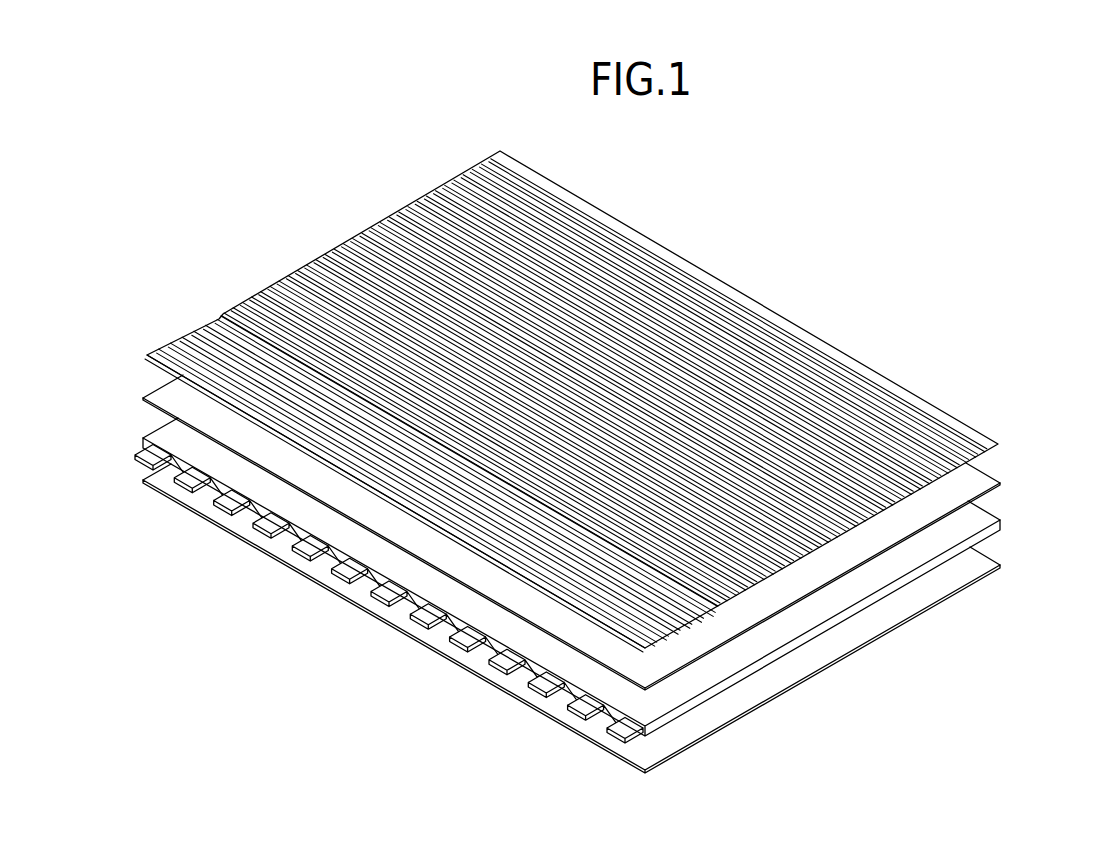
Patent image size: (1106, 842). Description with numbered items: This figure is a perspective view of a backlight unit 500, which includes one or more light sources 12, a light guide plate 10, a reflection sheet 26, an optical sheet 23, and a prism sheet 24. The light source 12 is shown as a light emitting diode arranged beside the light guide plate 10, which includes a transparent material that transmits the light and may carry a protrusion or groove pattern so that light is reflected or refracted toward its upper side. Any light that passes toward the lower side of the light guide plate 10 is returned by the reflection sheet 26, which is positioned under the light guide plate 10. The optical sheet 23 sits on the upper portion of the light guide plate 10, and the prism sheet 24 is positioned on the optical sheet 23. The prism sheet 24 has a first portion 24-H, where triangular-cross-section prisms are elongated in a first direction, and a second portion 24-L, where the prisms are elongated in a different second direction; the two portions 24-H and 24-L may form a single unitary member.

The backlight unit 500 is at (621, 462).
The prism sheet 24 is at (586, 401).
The first portion 24-H is at (366, 230).
The second portion 24-L is at (191, 330).
The optical sheet 23 is at (988, 486).
The light guide plate 10 is at (988, 535).
The reflection sheet 26 is at (1045, 450).
The light source 12 is at (140, 463).